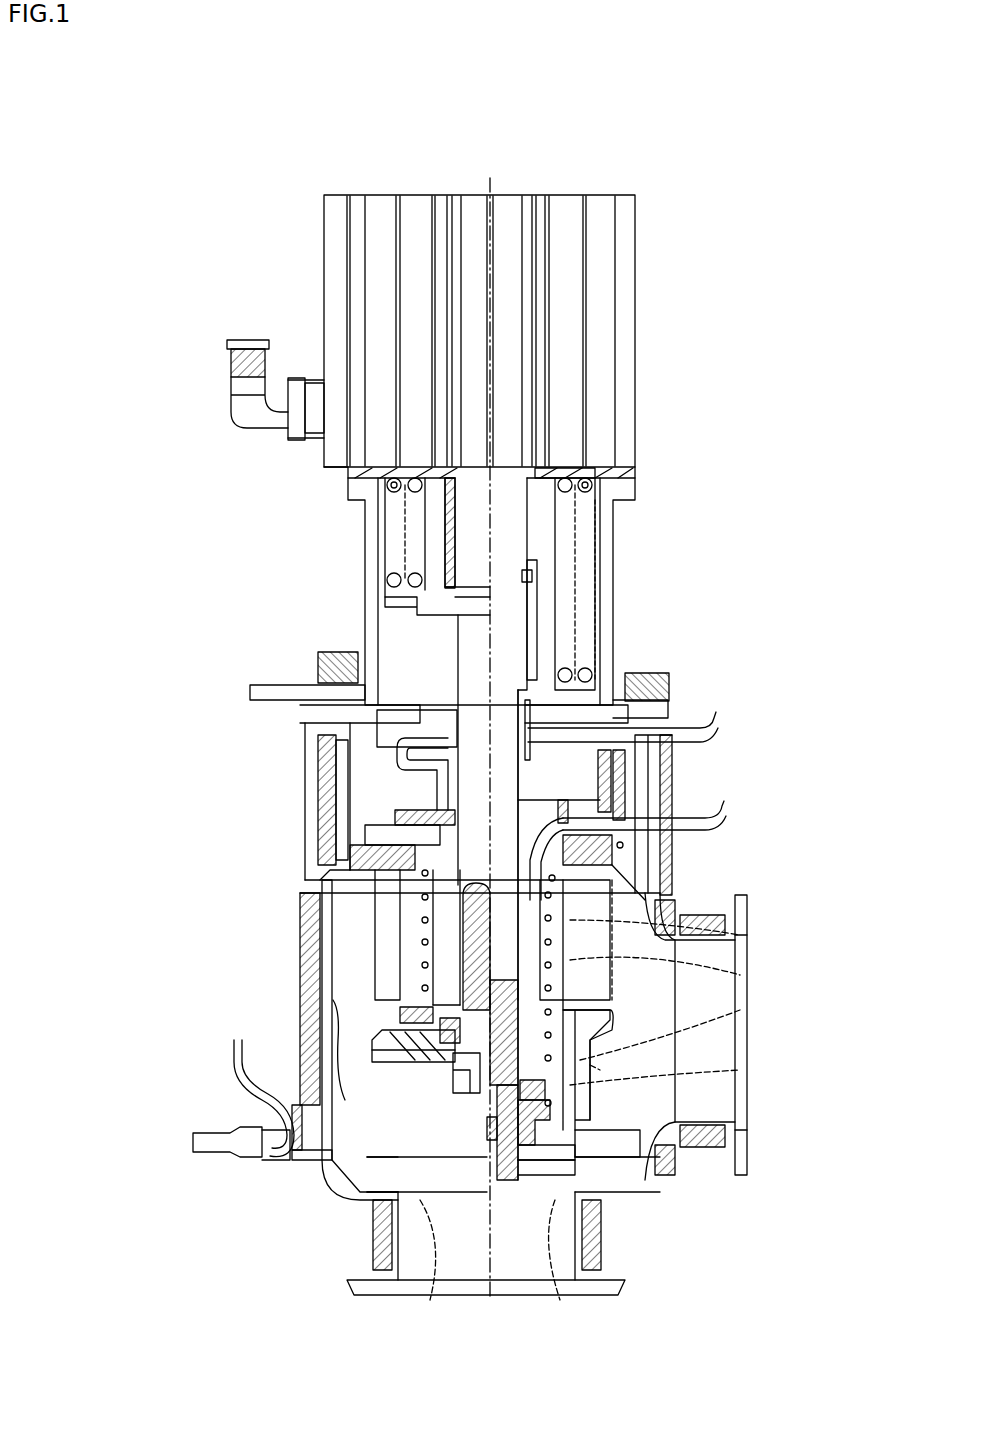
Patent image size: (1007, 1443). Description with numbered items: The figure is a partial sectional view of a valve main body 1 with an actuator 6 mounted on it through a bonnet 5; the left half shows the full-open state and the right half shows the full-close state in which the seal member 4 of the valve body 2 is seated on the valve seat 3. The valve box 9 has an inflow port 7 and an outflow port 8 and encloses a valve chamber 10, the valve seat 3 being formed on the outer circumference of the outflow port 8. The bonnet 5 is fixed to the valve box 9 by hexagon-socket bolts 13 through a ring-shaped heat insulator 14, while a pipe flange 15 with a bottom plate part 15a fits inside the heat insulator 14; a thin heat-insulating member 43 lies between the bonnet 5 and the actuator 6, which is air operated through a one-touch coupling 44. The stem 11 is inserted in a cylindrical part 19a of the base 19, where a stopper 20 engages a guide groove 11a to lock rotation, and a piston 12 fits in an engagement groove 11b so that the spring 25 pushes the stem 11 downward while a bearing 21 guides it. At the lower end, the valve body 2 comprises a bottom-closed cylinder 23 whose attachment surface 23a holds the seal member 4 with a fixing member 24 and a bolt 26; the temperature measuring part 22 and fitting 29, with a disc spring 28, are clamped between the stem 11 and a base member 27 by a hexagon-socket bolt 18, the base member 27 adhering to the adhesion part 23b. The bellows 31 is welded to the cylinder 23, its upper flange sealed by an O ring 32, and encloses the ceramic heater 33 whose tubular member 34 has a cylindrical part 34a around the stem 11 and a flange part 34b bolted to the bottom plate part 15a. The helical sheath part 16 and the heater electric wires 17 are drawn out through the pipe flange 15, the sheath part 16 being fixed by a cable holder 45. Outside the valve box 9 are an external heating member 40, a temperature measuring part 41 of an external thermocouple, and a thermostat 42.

The valve main body 1 is at (191, 781).
The valve body 2 is at (600, 1070).
The valve seat 3 is at (375, 1165).
The seal member 4 is at (298, 1025).
The bonnet 5 is at (600, 615).
The actuator 6 is at (600, 352).
The inflow port 7 is at (720, 1108).
The outflow port 8 is at (512, 1250).
The valve box 9 is at (545, 1160).
The valve chamber 10 is at (325, 906).
The stem 11 is at (470, 655).
The guide groove 11a is at (560, 662).
The engagement groove 11b is at (530, 690).
The piston 12 is at (385, 572).
The hexagon-socket bolts 13 is at (325, 660).
The heat insulator 14 is at (660, 762).
The pipe flange 15 is at (318, 786).
The bottom plate part 15a is at (325, 815).
The sheath part 16 is at (600, 1000).
The heater electric wires 17 is at (716, 720).
The hexagon-socket bolt 18 is at (445, 1070).
The base 19 is at (565, 470).
The cylindrical part 19a is at (565, 545).
The stopper 20 is at (535, 572).
The bearing 21 is at (395, 725).
The temperature measuring part 22 is at (295, 1140).
The cylinder 23 is at (298, 968).
The attachment surface 23a is at (298, 1090).
The adhesion part 23b is at (298, 990).
The fixing member 24 is at (502, 1165).
The spring 25 is at (370, 508).
The bolt 26 is at (475, 1140).
The base member 27 is at (605, 1157).
The disc spring 28 is at (545, 1095).
The fitting 29 is at (740, 1140).
The bellows 31 is at (590, 905).
The O ring 32 is at (335, 852).
The ceramic heater 33 is at (690, 962).
The tubular member 34 is at (700, 1002).
The cylindrical part 34a is at (620, 882).
The flange part 34b is at (605, 872).
The external heating member 40 is at (700, 905).
The temperature measuring part 41 is at (330, 1162).
The thermostat 42 is at (193, 1140).
The heat-insulating member 43 is at (600, 480).
The one-touch coupling 44 is at (240, 378).
The cable holder 45 is at (610, 830).